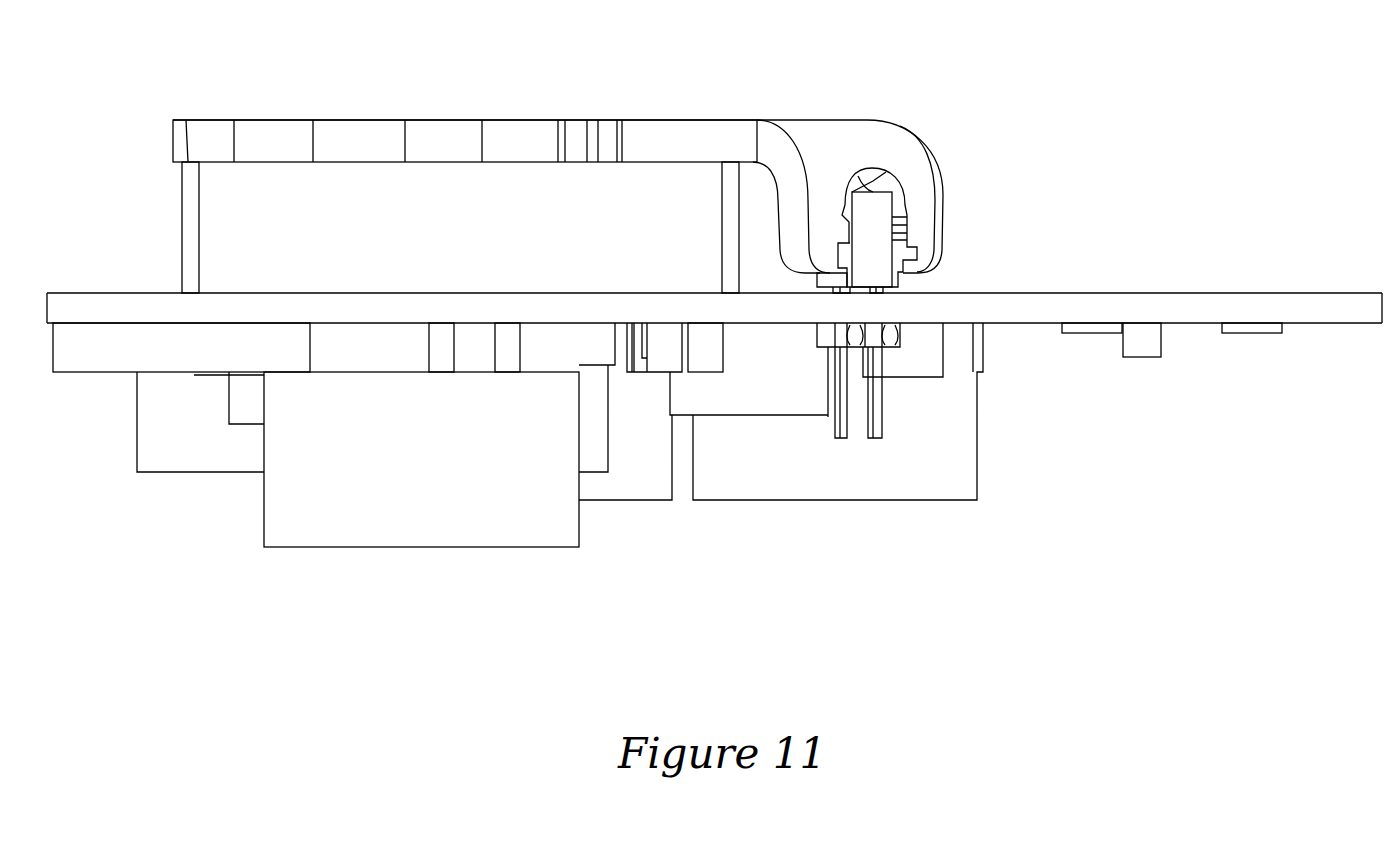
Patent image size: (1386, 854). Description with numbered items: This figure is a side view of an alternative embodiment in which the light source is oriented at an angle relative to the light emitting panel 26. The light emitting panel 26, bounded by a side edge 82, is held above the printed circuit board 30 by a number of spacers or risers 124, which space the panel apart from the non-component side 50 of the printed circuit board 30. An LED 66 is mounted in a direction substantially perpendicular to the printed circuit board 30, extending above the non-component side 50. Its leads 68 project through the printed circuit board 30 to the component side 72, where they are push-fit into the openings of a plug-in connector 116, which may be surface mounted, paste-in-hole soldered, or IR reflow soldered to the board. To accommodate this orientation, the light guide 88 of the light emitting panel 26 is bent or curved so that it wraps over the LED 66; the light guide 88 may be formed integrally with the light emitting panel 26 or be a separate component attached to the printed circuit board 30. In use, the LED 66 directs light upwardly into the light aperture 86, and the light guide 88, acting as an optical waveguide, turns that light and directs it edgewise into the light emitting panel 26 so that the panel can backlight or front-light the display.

The light emitting panel 26 is at (527, 92).
The printed circuit board 30 is at (1268, 302).
The non-component side 50 is at (1037, 293).
The LED 66 is at (873, 212).
The leads 68 is at (840, 432).
The component side 72 is at (1040, 323).
The side edge 82 is at (355, 133).
The light aperture 86 is at (897, 168).
The light guide 88 is at (866, 143).
The plug-in connector 116 is at (902, 338).
The spacers or risers 124 is at (190, 228).